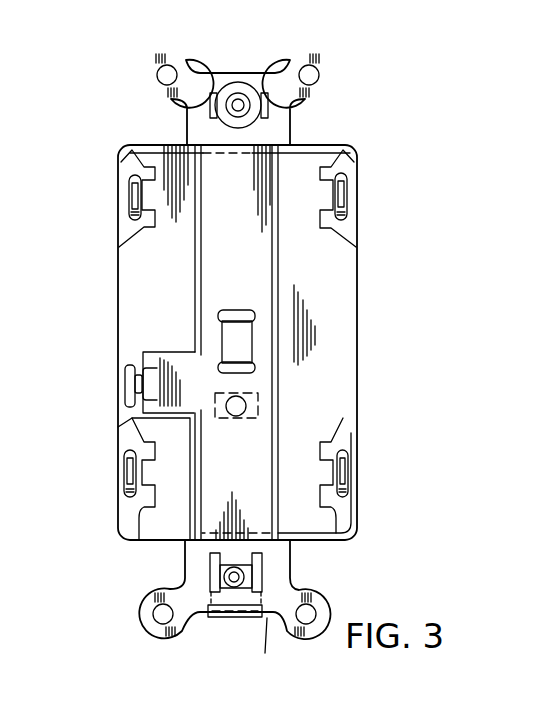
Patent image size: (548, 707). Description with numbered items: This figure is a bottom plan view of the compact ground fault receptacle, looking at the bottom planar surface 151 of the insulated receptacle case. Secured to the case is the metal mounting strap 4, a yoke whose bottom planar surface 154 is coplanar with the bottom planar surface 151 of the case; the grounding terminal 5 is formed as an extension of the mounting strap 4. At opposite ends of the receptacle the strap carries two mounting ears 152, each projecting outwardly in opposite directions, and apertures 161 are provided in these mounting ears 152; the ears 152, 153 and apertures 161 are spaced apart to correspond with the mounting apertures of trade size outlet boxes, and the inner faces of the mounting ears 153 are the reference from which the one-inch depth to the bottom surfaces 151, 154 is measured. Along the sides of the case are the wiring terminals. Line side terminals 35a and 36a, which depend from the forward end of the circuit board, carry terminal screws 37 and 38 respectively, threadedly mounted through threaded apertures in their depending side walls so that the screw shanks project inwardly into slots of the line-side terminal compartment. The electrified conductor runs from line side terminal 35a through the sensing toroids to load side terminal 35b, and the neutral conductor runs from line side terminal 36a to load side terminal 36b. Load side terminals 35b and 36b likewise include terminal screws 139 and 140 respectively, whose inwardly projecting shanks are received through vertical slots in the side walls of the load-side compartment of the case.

The mounting strap 4 is at (252, 172).
The grounding terminal 5 is at (168, 362).
The line side terminal 35a is at (350, 162).
The load side terminal 35b is at (350, 442).
The line side terminal 36a is at (120, 162).
The load side terminal 36b is at (127, 440).
The terminal screw 37 is at (347, 201).
The terminal screw 38 is at (130, 207).
The terminal screw 139 is at (347, 478).
The terminal screw 140 is at (127, 471).
The bottom planar surface of case 151 is at (332, 298).
The mounting ears 152 is at (198, 120).
The mounting ears 153 is at (225, 73).
The bottom planar surface of mounting strap 154 is at (250, 257).
The apertures 161 is at (270, 112).